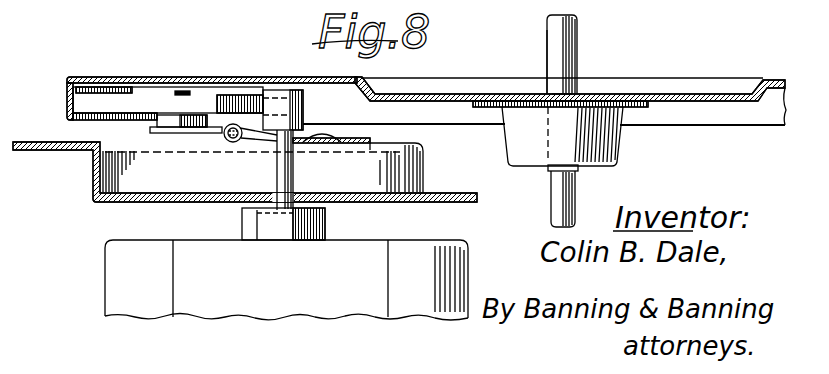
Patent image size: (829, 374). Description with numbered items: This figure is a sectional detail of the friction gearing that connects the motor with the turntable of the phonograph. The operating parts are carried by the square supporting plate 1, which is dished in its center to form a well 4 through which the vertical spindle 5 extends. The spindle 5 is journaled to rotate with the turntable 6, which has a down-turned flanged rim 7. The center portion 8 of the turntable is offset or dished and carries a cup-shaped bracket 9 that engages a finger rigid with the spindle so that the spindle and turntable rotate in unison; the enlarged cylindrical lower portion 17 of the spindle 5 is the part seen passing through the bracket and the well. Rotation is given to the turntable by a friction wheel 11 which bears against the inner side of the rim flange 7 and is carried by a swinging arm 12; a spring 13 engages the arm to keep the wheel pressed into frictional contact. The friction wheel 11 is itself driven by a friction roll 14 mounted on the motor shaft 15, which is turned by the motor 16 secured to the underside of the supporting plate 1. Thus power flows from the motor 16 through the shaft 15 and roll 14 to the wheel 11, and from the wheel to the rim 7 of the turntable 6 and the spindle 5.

The supporting plate 1 is at (29, 143).
The well 4 is at (405, 192).
The spindle 5 is at (577, 32).
The turntable 6 is at (214, 77).
The flanged rim 7 is at (67, 100).
The center portion 8 is at (454, 97).
The cup-shaped bracket 9 is at (617, 143).
The friction wheel 11 is at (219, 107).
The swinging arm 12 is at (215, 135).
The spring 13 is at (228, 143).
The friction roll 14 is at (295, 96).
The motor shaft 15 is at (293, 176).
The motor 16 is at (348, 255).
The lower portion of the spindle 17 is at (547, 55).